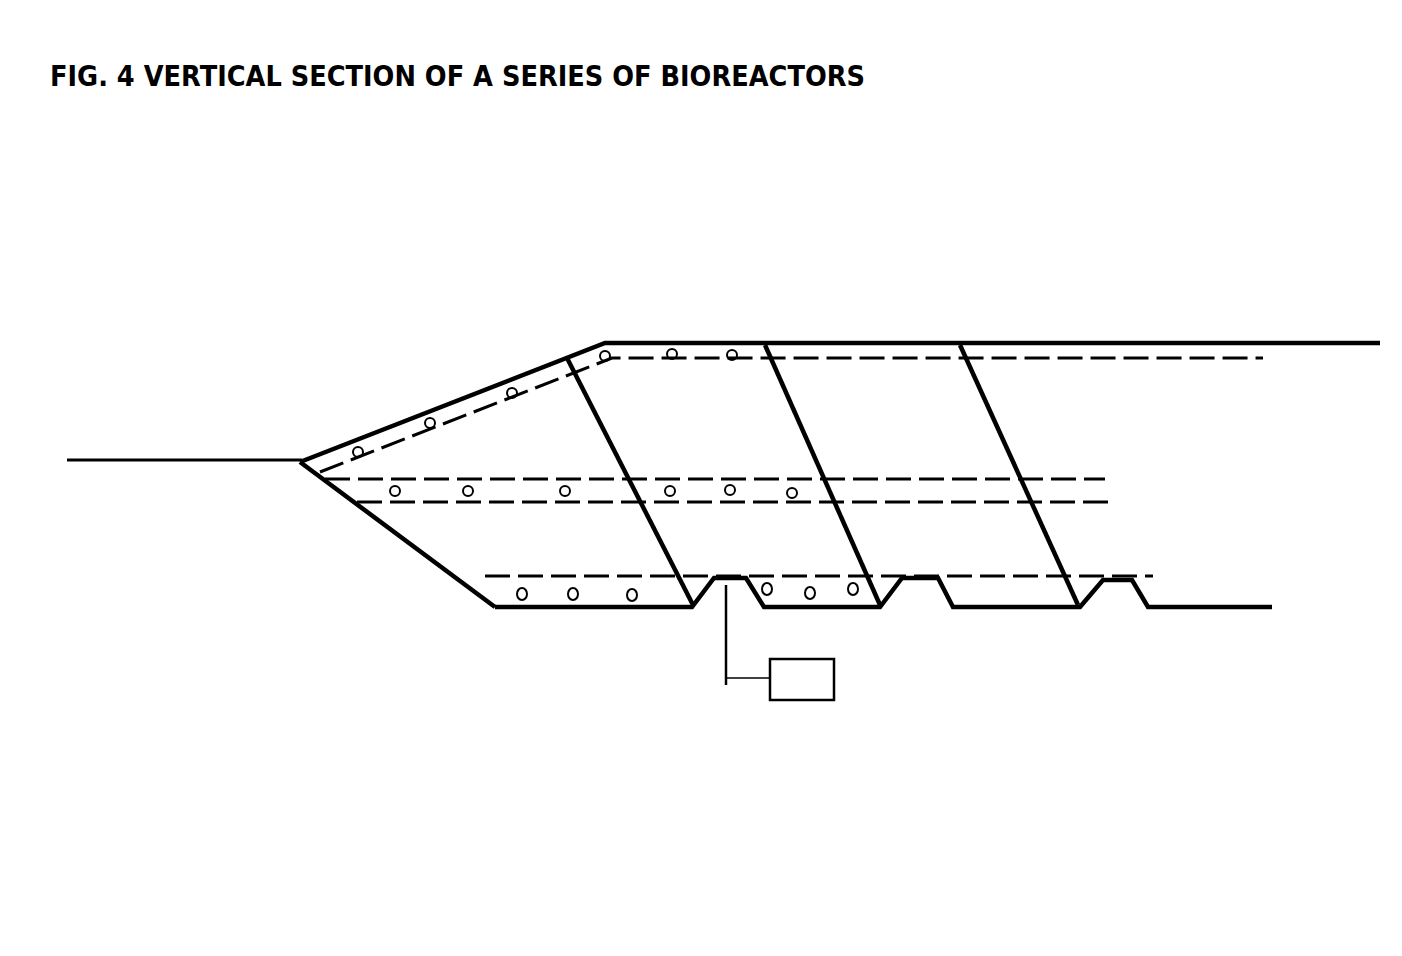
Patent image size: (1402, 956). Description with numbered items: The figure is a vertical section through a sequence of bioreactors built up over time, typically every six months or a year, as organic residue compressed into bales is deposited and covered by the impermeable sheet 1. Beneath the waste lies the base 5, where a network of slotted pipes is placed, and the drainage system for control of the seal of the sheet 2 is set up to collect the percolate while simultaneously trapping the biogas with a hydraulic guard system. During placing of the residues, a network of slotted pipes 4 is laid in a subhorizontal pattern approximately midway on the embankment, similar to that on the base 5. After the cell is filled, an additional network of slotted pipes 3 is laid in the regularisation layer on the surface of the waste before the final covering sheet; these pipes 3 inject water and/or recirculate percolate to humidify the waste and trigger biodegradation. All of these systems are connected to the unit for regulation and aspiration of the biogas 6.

The impermeable sheet 1 is at (395, 537).
The drainage system for control of the seal of the sheet 2 is at (496, 608).
The network of slotted pipes 3 is at (515, 385).
The network of slotted pipes 4 is at (566, 484).
The base 5 is at (632, 607).
The unit for regulation and aspiration of the biogas 6 is at (797, 692).